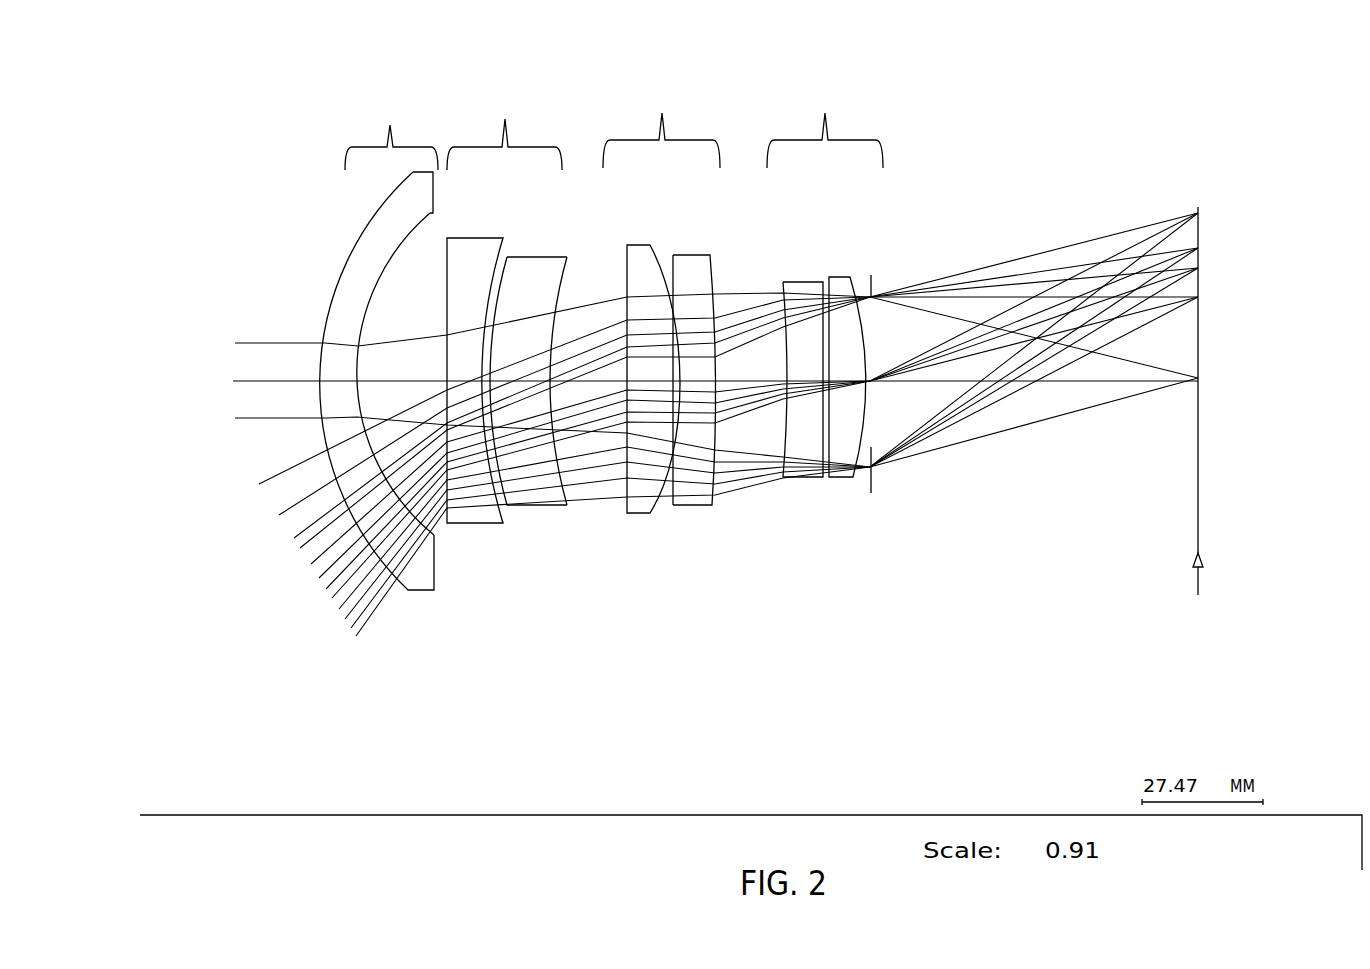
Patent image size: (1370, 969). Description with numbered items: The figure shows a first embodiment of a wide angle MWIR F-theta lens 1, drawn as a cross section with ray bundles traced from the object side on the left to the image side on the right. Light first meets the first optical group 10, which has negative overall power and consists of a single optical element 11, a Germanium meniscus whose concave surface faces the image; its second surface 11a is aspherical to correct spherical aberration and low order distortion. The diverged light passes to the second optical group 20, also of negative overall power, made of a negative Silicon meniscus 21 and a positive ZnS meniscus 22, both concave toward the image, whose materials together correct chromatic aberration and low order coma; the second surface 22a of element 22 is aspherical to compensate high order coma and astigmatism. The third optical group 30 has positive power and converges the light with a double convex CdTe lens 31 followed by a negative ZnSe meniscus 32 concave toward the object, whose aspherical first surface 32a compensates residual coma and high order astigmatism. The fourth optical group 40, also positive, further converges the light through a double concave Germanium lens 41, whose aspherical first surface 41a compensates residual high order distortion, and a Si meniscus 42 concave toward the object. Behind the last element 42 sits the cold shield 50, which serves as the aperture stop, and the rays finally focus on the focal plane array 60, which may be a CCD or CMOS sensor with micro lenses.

The wide angle MWIR F-theta lens 1 is at (257, 147).
The first optical group 10 is at (391, 126).
The second optical group 20 is at (504, 129).
The third optical group 30 is at (661, 122).
The fourth optical group 40 is at (825, 122).
The optical element 11 is at (419, 418).
The second surface 11a is at (403, 248).
The first optical element 21 is at (475, 538).
The second optical element 22 is at (573, 389).
The second surface 22a is at (572, 283).
The first optical element 31 is at (641, 528).
The second optical element 32 is at (729, 398).
The first surface 32a is at (675, 277).
The first optical element 41 is at (849, 371).
The first surface 41a is at (787, 300).
The second optical element 42 is at (840, 492).
The cold shield 50 is at (873, 483).
The focal plane array 60 is at (1207, 519).